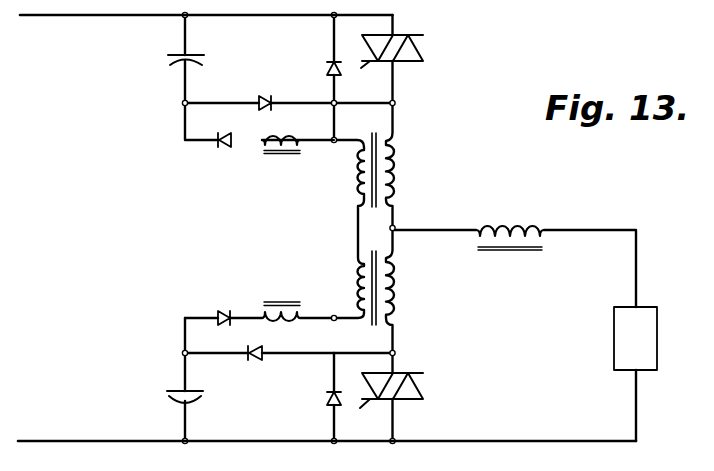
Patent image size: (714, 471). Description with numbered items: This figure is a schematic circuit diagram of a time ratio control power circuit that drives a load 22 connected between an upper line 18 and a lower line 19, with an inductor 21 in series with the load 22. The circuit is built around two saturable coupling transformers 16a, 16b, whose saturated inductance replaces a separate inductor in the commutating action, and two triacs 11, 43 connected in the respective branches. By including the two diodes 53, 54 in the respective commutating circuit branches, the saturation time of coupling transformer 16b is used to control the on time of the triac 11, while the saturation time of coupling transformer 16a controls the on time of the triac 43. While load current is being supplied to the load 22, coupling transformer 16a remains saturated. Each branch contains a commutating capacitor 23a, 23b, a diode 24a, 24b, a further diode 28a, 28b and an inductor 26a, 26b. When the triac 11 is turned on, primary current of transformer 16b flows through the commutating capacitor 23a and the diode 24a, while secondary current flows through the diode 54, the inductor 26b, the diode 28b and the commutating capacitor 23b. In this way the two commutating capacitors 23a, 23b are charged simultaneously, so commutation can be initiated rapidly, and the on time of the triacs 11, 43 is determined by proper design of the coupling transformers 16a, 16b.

The supply line 18 is at (57, 17).
The supply line 19 is at (85, 438).
The commutating capacitor 23b is at (197, 54).
The diode 24b is at (261, 96).
The diode 53 is at (329, 61).
The triac 11 is at (413, 44).
The diode 28b is at (225, 148).
The inductor 26b is at (268, 155).
The coupling transformer 16a is at (404, 162).
The coupling transformer 16b is at (402, 303).
The inductor 21 is at (528, 228).
The load 22 is at (652, 345).
The diode 28a is at (218, 312).
The inductor 26a is at (285, 305).
The diode 24a is at (258, 362).
The commutating capacitor 23a is at (173, 390).
The diode 54 is at (324, 399).
The triac 43 is at (415, 388).